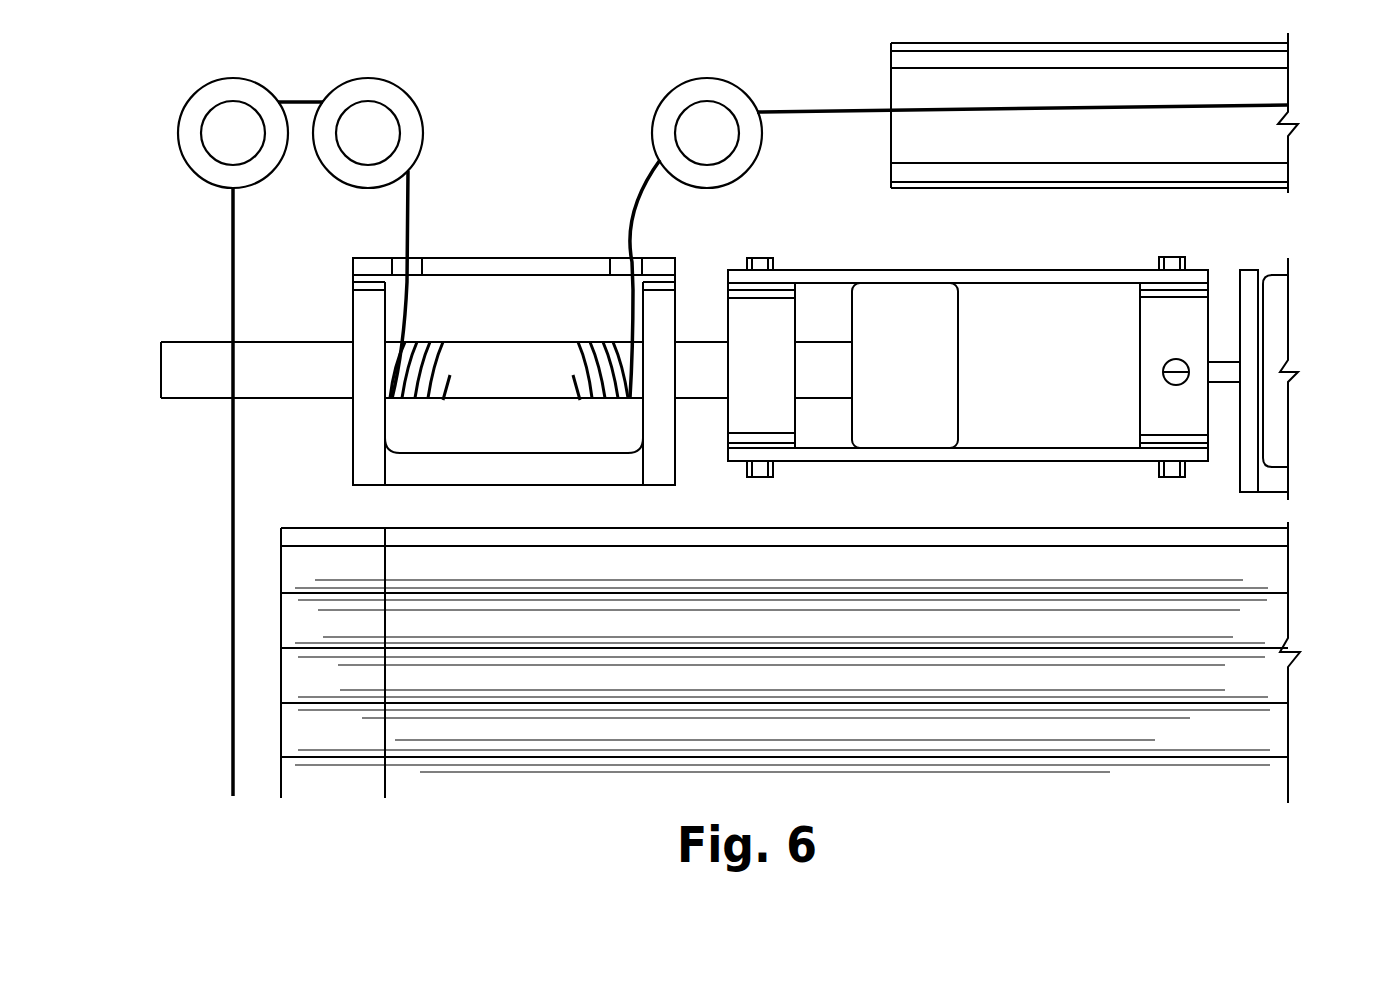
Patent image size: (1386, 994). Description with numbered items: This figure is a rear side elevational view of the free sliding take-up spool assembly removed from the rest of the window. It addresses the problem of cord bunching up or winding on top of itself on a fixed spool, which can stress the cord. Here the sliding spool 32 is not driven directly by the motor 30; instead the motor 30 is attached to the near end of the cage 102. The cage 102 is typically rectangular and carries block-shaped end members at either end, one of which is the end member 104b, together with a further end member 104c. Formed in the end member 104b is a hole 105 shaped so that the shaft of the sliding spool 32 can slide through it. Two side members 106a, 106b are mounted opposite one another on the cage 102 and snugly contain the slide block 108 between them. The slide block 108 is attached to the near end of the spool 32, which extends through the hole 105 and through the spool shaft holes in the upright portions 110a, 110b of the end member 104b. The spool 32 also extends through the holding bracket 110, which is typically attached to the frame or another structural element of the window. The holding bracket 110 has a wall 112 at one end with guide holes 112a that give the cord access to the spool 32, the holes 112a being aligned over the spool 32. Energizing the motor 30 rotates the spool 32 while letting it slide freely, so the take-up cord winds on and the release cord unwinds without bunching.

The motor 30 is at (1282, 322).
The sliding spool 32 is at (522, 381).
The cage 102 is at (984, 355).
The end member 104b is at (785, 383).
The end plate 104c is at (1200, 423).
The hole 105 is at (1150, 223).
The side member 106a is at (958, 270).
The side member 106b is at (972, 465).
The slide block 108 is at (923, 383).
The holding bracket 110 is at (480, 467).
The upright portion 110a is at (355, 427).
The upright portion 110b is at (670, 445).
The wall 112 is at (550, 258).
The guide holes 112a is at (402, 260).